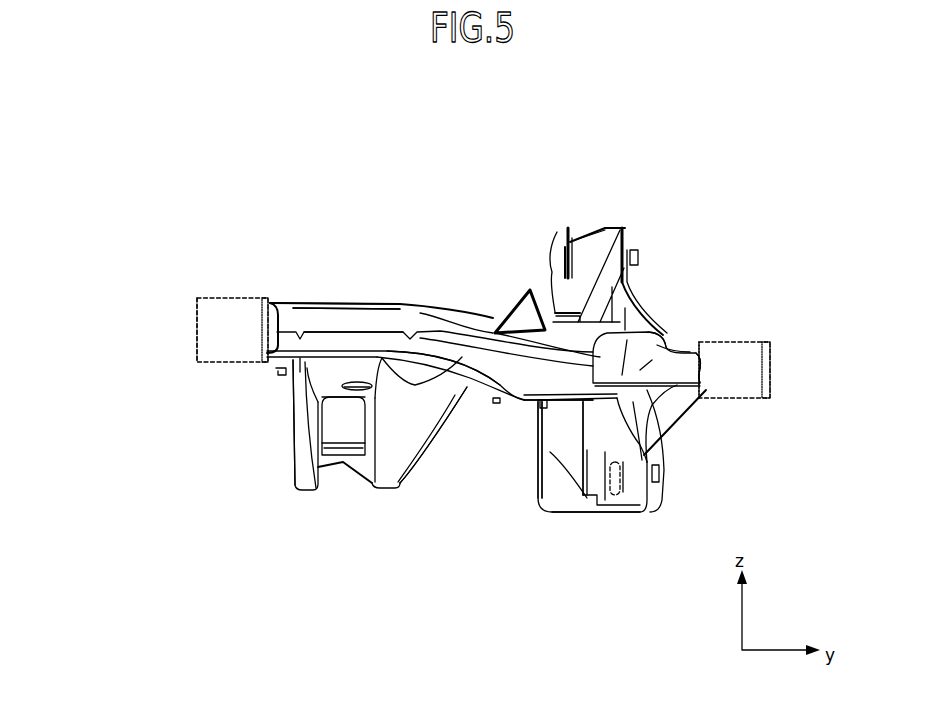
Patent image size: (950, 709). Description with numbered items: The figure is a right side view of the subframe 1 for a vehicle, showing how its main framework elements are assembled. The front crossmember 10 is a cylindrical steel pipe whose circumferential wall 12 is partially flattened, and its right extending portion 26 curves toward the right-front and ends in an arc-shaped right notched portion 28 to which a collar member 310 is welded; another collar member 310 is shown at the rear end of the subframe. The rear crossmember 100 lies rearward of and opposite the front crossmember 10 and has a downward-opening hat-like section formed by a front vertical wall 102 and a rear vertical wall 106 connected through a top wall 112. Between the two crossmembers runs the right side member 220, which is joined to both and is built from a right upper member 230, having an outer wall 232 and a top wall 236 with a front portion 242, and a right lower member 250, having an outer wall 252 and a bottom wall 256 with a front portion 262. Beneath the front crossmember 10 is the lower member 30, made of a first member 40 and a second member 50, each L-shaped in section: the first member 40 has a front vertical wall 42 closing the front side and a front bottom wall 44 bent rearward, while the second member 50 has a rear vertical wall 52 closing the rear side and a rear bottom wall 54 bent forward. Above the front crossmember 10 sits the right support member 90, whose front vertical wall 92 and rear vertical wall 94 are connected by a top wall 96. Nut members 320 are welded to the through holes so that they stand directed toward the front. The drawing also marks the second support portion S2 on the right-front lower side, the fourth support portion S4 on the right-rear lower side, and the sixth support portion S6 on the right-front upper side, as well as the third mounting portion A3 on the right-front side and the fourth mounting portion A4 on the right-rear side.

The subframe 1 is at (720, 152).
The front crossmember 10 is at (746, 315).
The circumferential wall 12 is at (704, 333).
The right extending portion 26 is at (684, 322).
The right notched portion 28 is at (704, 368).
The lower member 30 is at (567, 547).
The first member 40 is at (675, 467).
The front vertical wall 42 is at (673, 433).
The front bottom wall 44 is at (632, 515).
The second member 50 is at (538, 517).
The rear vertical wall 52 is at (540, 482).
The rear bottom wall 54 is at (560, 510).
The right support member 90 is at (528, 252).
The front vertical wall 92 is at (630, 233).
The rear vertical wall 94 is at (563, 230).
The top wall 96 is at (598, 229).
The rear crossmember 100 is at (295, 516).
The front vertical wall 102 is at (454, 388).
The rear vertical wall 106 is at (315, 454).
The top wall 112 is at (318, 384).
The right side member 220 is at (285, 238).
The right upper member 230 is at (388, 277).
The outer wall 232 is at (343, 316).
The top wall 236 is at (445, 274).
The front portion 242 is at (568, 328).
The right lower member 250 is at (480, 396).
The outer wall 252 is at (327, 338).
The bottom wall 256 is at (322, 362).
The front portion 262 is at (573, 414).
The collar member 310 is at (197, 318).
The nut member 320 is at (641, 258).
The third mounting portion A3 is at (768, 322).
The fourth mounting portion A4 is at (205, 292).
The second support portion S2 is at (612, 531).
The fourth support portion S4 is at (343, 493).
The sixth support portion S6 is at (609, 214).